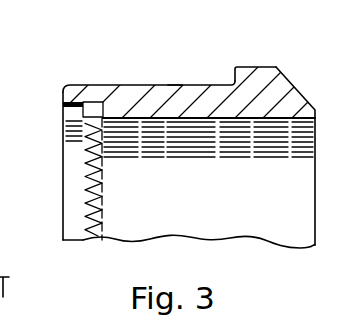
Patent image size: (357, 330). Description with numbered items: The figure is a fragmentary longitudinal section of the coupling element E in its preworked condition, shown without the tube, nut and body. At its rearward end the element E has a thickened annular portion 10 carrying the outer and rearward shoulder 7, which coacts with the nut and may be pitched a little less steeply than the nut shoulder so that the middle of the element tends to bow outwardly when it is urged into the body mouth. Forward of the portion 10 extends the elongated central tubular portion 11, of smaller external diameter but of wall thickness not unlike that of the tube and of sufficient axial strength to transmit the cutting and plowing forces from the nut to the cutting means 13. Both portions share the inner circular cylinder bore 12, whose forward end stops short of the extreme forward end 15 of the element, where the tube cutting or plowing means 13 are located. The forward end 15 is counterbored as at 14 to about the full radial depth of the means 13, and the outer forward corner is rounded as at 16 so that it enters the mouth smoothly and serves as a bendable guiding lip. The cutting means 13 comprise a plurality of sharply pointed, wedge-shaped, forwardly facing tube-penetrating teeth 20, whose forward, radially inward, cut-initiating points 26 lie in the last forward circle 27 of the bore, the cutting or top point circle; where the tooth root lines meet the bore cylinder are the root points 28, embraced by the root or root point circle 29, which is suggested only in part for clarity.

The outer and rearward shoulder 7 is at (286, 82).
The thickened annular portion 10 is at (255, 80).
The elongated central tubular portion 11 is at (138, 97).
The inner circular cylinder bore 12 is at (228, 119).
The tube cutting or plowing means 13 is at (64, 205).
The counterbore 14 is at (80, 112).
The forward end 15 is at (90, 85).
The rounded outer forward corner 16 is at (63, 86).
The tube-penetrating teeth 20 is at (82, 109).
The cut-initiating points 26 is at (84, 179).
The cutting or top point circle 27 is at (84, 201).
The root points 28 is at (103, 157).
The root or root point circle 29 is at (103, 223).
The coupling element E is at (175, 83).